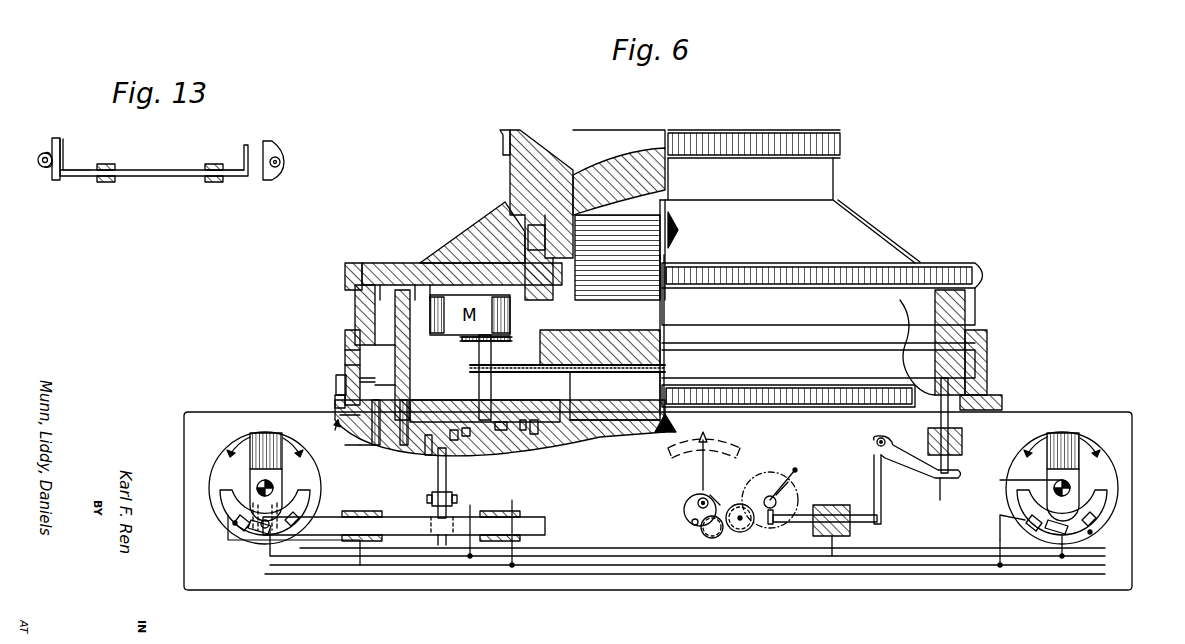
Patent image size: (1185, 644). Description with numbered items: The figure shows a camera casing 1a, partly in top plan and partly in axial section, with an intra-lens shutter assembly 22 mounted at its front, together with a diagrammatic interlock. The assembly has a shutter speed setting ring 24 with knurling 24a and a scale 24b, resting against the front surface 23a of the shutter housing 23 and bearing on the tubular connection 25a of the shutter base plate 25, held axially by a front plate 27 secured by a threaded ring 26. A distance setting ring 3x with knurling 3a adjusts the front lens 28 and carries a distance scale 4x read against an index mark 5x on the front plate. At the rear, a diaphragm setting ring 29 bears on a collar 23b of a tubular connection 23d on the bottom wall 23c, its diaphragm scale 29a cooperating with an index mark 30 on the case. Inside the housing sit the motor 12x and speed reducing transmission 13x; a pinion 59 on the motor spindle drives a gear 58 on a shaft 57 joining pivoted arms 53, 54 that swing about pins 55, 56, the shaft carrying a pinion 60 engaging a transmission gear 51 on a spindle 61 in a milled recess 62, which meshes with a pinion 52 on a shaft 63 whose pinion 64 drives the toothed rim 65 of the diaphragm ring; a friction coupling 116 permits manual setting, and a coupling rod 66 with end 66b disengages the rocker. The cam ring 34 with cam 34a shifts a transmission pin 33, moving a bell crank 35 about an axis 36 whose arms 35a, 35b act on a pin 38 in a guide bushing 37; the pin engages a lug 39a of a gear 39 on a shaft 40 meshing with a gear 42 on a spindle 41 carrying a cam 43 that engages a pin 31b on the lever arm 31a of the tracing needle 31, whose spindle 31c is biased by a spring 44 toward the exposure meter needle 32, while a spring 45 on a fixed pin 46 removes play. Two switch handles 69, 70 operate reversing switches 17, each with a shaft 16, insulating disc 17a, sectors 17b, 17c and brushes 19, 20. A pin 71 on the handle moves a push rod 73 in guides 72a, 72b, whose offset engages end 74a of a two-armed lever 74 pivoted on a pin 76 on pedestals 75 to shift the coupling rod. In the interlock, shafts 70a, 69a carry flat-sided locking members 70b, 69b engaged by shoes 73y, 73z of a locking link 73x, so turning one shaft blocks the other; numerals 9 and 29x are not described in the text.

In FIG. 6, the camera casing 1a is at (1097, 421).
In FIG. 6, the knurling 3a is at (500, 135).
In FIG. 6, the distance setting ring 3x is at (528, 152).
In FIG. 6, the distance scale 4x is at (745, 178).
In FIG. 6, the index mark 5x is at (678, 232).
In FIG. 6, the mounting pin 9 is at (523, 436).
In FIG. 6, the motor 12x is at (440, 292).
In FIG. 6, the speed reducing transmission 13x is at (400, 300).
In FIG. 6, the shaft 16 is at (257, 487).
In FIG. 6, the reversing switch 17 is at (655, 490).
In FIG. 6, the disc 17a is at (245, 460).
In FIG. 6, the sector 17b is at (220, 495).
In FIG. 6, the sector 17c is at (255, 533).
In FIG. 6, the brush 19 is at (233, 525).
In FIG. 6, the brush 20 is at (1092, 533).
In FIG. 6, the intra-lens shutter assembly 22 is at (992, 303).
In FIG. 6, the shutter housing 23 is at (450, 355).
In FIG. 6, the front surface of shutter housing 23a is at (350, 283).
In FIG. 6, the collar 23b is at (550, 435).
In FIG. 6, the bottom wall of shutter housing 23c is at (540, 422).
In FIG. 6, the tubular connection 23d is at (580, 432).
In FIG. 6, the shutter speed setting ring 24 is at (378, 262).
In FIG. 6, the knurling 24a is at (345, 268).
In FIG. 6, the shutter speed scale 24b is at (355, 292).
In FIG. 6, the shutter base plate 25 is at (575, 380).
In FIG. 6, the tubular connection 25a is at (545, 215).
In FIG. 6, the threaded ring 26 is at (528, 240).
In FIG. 6, the front plate 27 is at (468, 238).
In FIG. 6, the front lens 28 is at (615, 165).
In FIG. 6, the diaphragm setting ring 29 is at (335, 402).
In FIG. 6, the diaphragm scale 29a is at (345, 366).
In FIG. 6, the pin 29x is at (365, 447).
In FIG. 6, the index mark 30 is at (660, 433).
In FIG. 6, the tracing member 31 is at (708, 440).
In FIG. 6, the lever arm 31a is at (686, 515).
In FIG. 6, the pin 31b is at (694, 526).
In FIG. 6, the spindle 31c is at (698, 503).
In FIG. 6, the exposure meter needle 32 is at (675, 452).
In FIG. 6, the transmission pin 33 is at (950, 438).
In FIG. 6, the cam ring 34 is at (970, 340).
In FIG. 6, the cam 34a is at (965, 378).
In FIG. 6, the bell crank 35 is at (915, 462).
In FIG. 6, the arm of bell crank 35a is at (952, 496).
In FIG. 6, the arm of bell crank 35b is at (882, 520).
In FIG. 6, the axis 36 is at (876, 440).
In FIG. 6, the guide bushing 37 is at (833, 538).
In FIG. 6, the transmission pin 38 is at (850, 510).
In FIG. 6, the gear 39 is at (806, 500).
In FIG. 6, the lug 39a is at (772, 525).
In FIG. 6, the shaft 40 is at (769, 496).
In FIG. 6, the spindle 41 is at (762, 528).
In FIG. 6, the gear 42 is at (740, 532).
In FIG. 6, the cam 43 is at (712, 540).
In FIG. 6, the spring 44 is at (716, 498).
In FIG. 6, the spring 45 is at (780, 495).
In FIG. 6, the fixed pin 46 is at (792, 498).
In FIG. 6, the transmission gear 51 is at (376, 446).
In FIG. 6, the pinion 52 is at (336, 432).
In FIG. 6, the pivoted arm 53 is at (540, 345).
In FIG. 6, the pivoted arm 54 is at (500, 432).
In FIG. 6, the pin 55 is at (565, 352).
In FIG. 6, the pin 56 is at (532, 436).
In FIG. 6, the shaft 57 is at (358, 379).
In FIG. 6, the gear 58 is at (482, 345).
In FIG. 6, the pinion 59 is at (487, 336).
In FIG. 6, the pinion 60 is at (466, 438).
In FIG. 6, the spindle 61 is at (404, 446).
In FIG. 6, the milled recess 62 is at (522, 432).
In FIG. 6, the shaft 63 is at (340, 416).
In FIG. 6, the pinion 64 is at (347, 340).
In FIG. 6, the toothed rim 65 is at (345, 352).
In FIG. 6, the coupling rod 66 is at (427, 455).
In FIG. 6, the end of coupling rod 66b is at (454, 442).
In FIG. 6, the switch handle 69 is at (1020, 469).
In FIG. 13, the shaft 69a is at (281, 162).
In FIG. 13, the locking member 69b is at (270, 144).
In FIG. 6, the switch handle 70 is at (271, 500).
In FIG. 13, the shaft 70a is at (44, 154).
In FIG. 13, the locking member 70b is at (57, 181).
In FIG. 6, the pin 71 is at (264, 530).
In FIG. 6, the guide 72a is at (365, 542).
In FIG. 6, the guide 72b is at (503, 542).
In FIG. 6, the push rod 73 is at (322, 536).
In FIG. 13, the locking link 73x is at (143, 177).
In FIG. 13, the end shoe 73y is at (66, 150).
In FIG. 13, the end shoe 73z is at (242, 158).
In FIG. 6, the two-armed lever 74 is at (447, 502).
In FIG. 6, the end of lever 74a is at (443, 546).
In FIG. 6, the pedestals 75 is at (433, 500).
In FIG. 6, the pin 76 is at (427, 498).
In FIG. 6, the friction coupling 116 is at (336, 384).